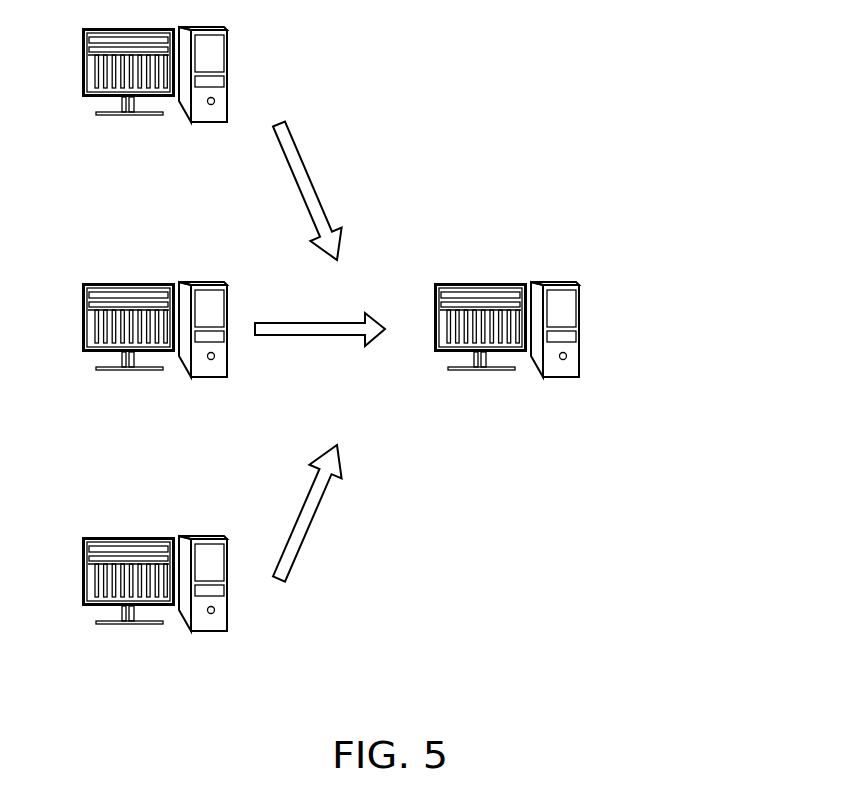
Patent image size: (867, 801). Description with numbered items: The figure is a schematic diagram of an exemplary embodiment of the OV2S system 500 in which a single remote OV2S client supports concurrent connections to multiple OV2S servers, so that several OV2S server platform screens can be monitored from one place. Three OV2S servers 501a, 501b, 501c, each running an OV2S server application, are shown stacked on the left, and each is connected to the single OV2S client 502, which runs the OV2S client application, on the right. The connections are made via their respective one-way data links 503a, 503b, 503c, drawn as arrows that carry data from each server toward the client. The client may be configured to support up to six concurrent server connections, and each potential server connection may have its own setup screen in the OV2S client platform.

The system 500 is at (505, 169).
The OV2S server 501a is at (131, 145).
The OV2S server 501b is at (131, 400).
The OV2S server 501c is at (131, 655).
The OV2S client 502 is at (563, 389).
The one-way data link 503a is at (311, 198).
The one-way data link 503b is at (303, 330).
The one-way data link 503c is at (307, 527).